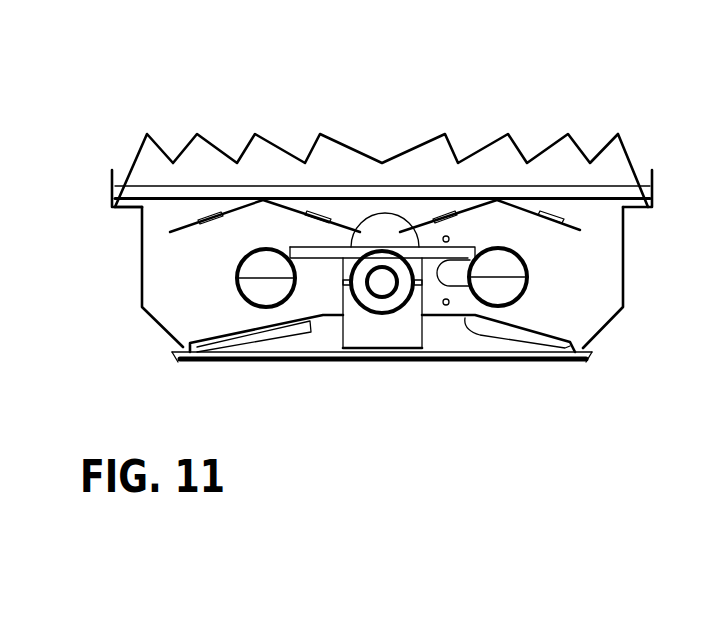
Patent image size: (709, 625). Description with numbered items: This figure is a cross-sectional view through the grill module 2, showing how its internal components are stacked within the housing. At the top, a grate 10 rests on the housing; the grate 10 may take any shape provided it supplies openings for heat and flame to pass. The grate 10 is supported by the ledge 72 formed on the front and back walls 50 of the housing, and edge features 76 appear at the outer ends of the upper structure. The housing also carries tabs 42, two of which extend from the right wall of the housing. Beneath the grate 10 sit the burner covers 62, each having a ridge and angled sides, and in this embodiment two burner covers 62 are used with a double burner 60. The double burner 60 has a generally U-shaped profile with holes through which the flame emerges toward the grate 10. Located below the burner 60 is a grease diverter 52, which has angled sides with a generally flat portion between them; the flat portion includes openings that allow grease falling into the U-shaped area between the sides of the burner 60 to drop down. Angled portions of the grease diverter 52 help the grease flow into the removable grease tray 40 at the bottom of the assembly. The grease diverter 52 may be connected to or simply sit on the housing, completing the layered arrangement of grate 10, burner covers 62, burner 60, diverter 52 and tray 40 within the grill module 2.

The grate 10 is at (568, 133).
The flange 76 is at (112, 176).
The ledge 72 is at (130, 210).
The front and back walls 50 is at (142, 252).
The burner covers 62 is at (355, 233).
The burner 60 is at (527, 285).
The grease diverter 52 is at (323, 317).
The tabs 42 is at (313, 362).
The removable grease tray 40 is at (397, 362).
The grill module 2 is at (232, 624).